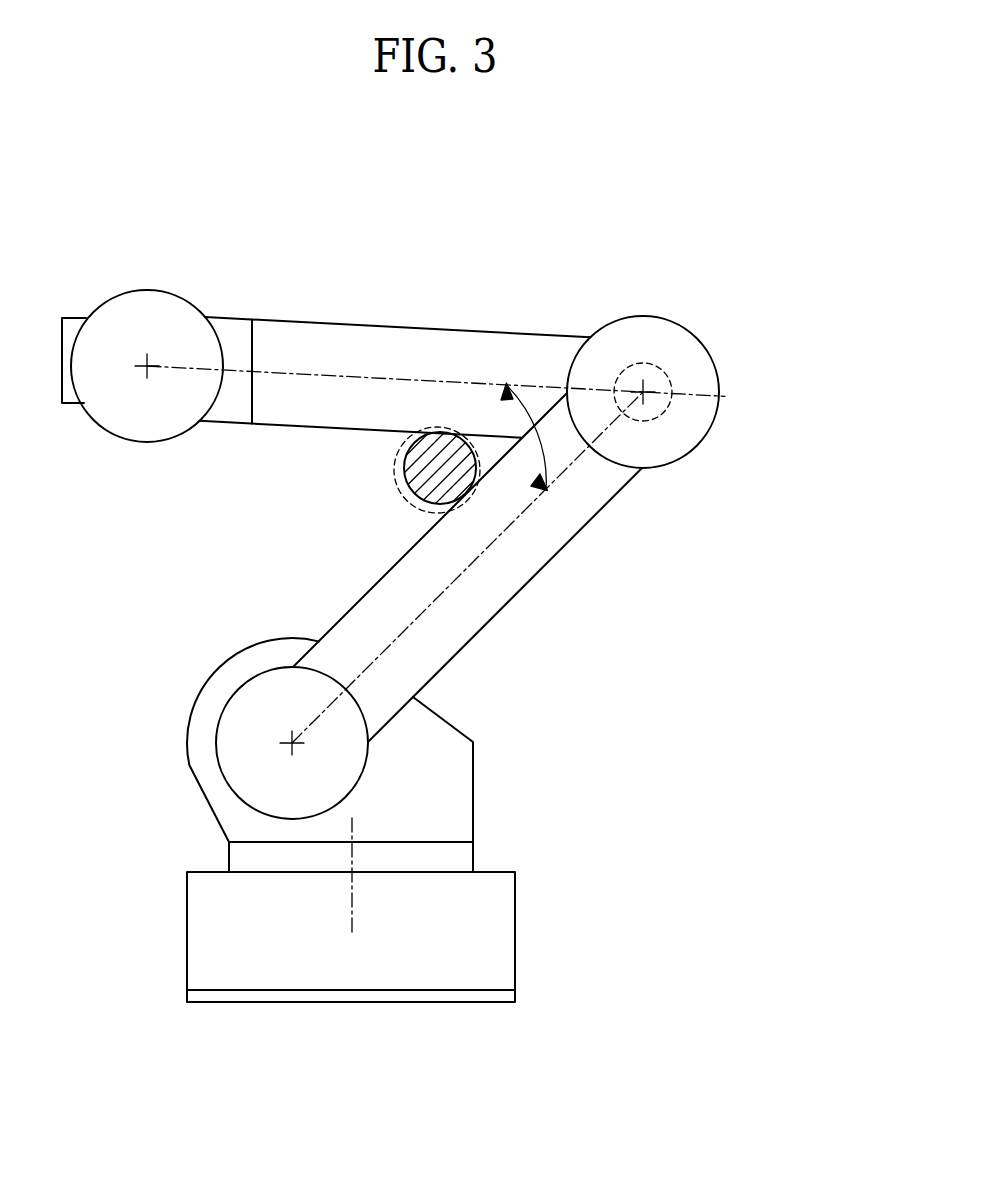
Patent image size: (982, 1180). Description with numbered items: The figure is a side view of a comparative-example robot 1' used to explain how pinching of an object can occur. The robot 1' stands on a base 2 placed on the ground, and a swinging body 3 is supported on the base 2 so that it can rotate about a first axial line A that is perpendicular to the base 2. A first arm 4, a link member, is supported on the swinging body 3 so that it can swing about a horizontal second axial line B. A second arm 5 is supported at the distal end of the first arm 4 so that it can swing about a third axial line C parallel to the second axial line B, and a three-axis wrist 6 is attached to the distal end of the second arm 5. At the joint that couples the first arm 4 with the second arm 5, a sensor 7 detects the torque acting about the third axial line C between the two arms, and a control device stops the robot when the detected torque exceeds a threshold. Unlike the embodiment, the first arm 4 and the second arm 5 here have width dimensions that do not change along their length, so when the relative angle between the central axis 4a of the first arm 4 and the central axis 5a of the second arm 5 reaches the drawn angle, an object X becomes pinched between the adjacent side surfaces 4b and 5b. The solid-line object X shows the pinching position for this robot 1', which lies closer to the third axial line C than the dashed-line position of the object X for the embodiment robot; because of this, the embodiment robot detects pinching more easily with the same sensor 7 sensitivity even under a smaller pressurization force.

The robot 1' is at (436, 589).
The base 2 is at (516, 928).
The swinging body 3 is at (474, 798).
The first arm 4 is at (508, 602).
The central axis of the first arm 4a is at (522, 513).
The side surface of the first arm 4b is at (405, 555).
The second arm 5 is at (428, 322).
The central axis of the second arm 5a is at (282, 372).
The side surface of the second arm 5b is at (345, 428).
The wrist 6 is at (152, 290).
The sensor 7 is at (640, 363).
The first axial line A is at (352, 905).
The second axial line B is at (290, 741).
The third axial line C is at (650, 388).
The object X is at (392, 472).